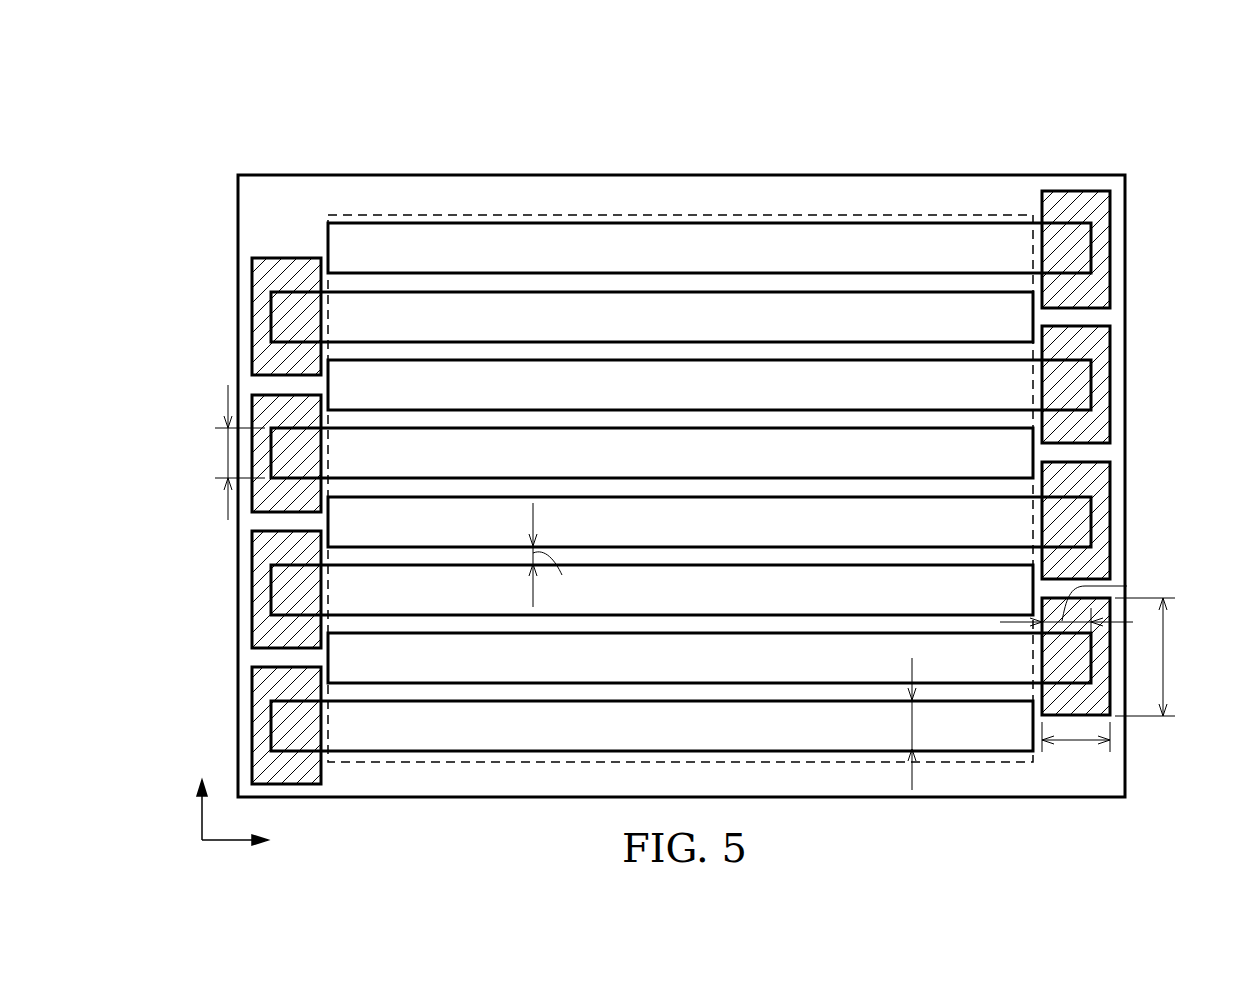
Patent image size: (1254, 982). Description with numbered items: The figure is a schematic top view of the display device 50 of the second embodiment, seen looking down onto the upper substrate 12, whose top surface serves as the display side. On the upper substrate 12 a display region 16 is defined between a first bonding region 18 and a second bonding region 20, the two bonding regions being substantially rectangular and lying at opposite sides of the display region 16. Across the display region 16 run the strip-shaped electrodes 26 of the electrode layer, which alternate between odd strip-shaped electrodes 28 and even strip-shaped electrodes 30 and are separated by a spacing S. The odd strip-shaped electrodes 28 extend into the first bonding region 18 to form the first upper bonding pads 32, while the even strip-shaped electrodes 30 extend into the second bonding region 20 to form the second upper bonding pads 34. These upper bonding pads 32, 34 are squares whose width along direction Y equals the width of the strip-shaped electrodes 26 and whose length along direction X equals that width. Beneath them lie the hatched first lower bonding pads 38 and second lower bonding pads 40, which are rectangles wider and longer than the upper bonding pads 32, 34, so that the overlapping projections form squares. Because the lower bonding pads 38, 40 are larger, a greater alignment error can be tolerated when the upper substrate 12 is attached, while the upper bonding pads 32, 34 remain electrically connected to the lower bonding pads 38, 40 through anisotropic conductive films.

The display device 50 is at (1152, 112).
The upper substrate 12 is at (1127, 243).
The display region 16 is at (1030, 153).
The first bonding region 18 is at (328, 153).
The second bonding region 20 is at (1125, 153).
The strip-shaped electrodes 26 is at (185, 647).
The odd strip-shaped electrodes 28 is at (358, 724).
The even strip-shaped electrodes 30 is at (362, 656).
The first upper bonding pads 32 is at (271, 318).
The second upper bonding pads 34 is at (1092, 388).
The first lower bonding pads 38 is at (262, 350).
The second lower bonding pads 40 is at (1092, 285).